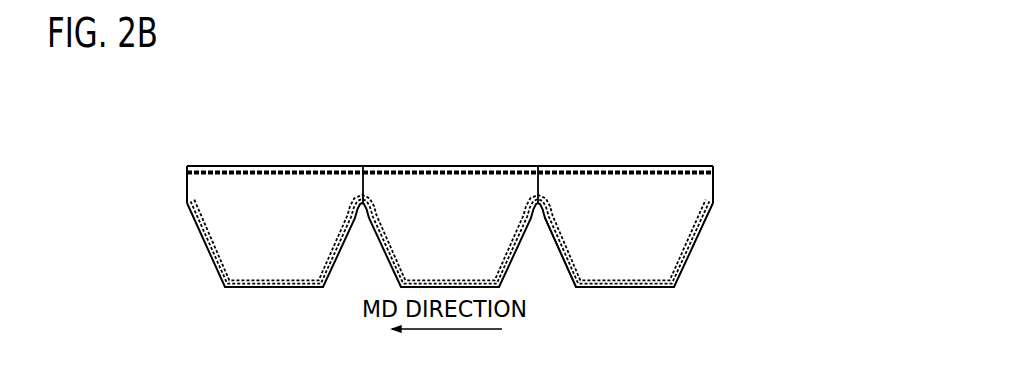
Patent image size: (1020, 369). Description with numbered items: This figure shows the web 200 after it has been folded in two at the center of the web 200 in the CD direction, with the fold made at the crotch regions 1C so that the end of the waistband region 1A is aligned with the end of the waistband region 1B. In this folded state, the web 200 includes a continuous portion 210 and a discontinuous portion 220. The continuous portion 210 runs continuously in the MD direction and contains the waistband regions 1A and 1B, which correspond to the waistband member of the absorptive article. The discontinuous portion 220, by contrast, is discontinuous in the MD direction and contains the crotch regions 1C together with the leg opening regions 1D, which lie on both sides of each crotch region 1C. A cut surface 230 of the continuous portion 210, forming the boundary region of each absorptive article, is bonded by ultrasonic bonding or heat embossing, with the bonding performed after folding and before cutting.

The web 200 is at (507, 209).
The continuous portion 210 is at (507, 155).
The discontinuous portion 220 is at (495, 273).
The cut surface 230 is at (362, 192).
The waistband region 1A is at (615, 197).
The waistband region 1B is at (440, 200).
The crotch region 1C is at (628, 257).
The leg opening region 1D is at (545, 253).